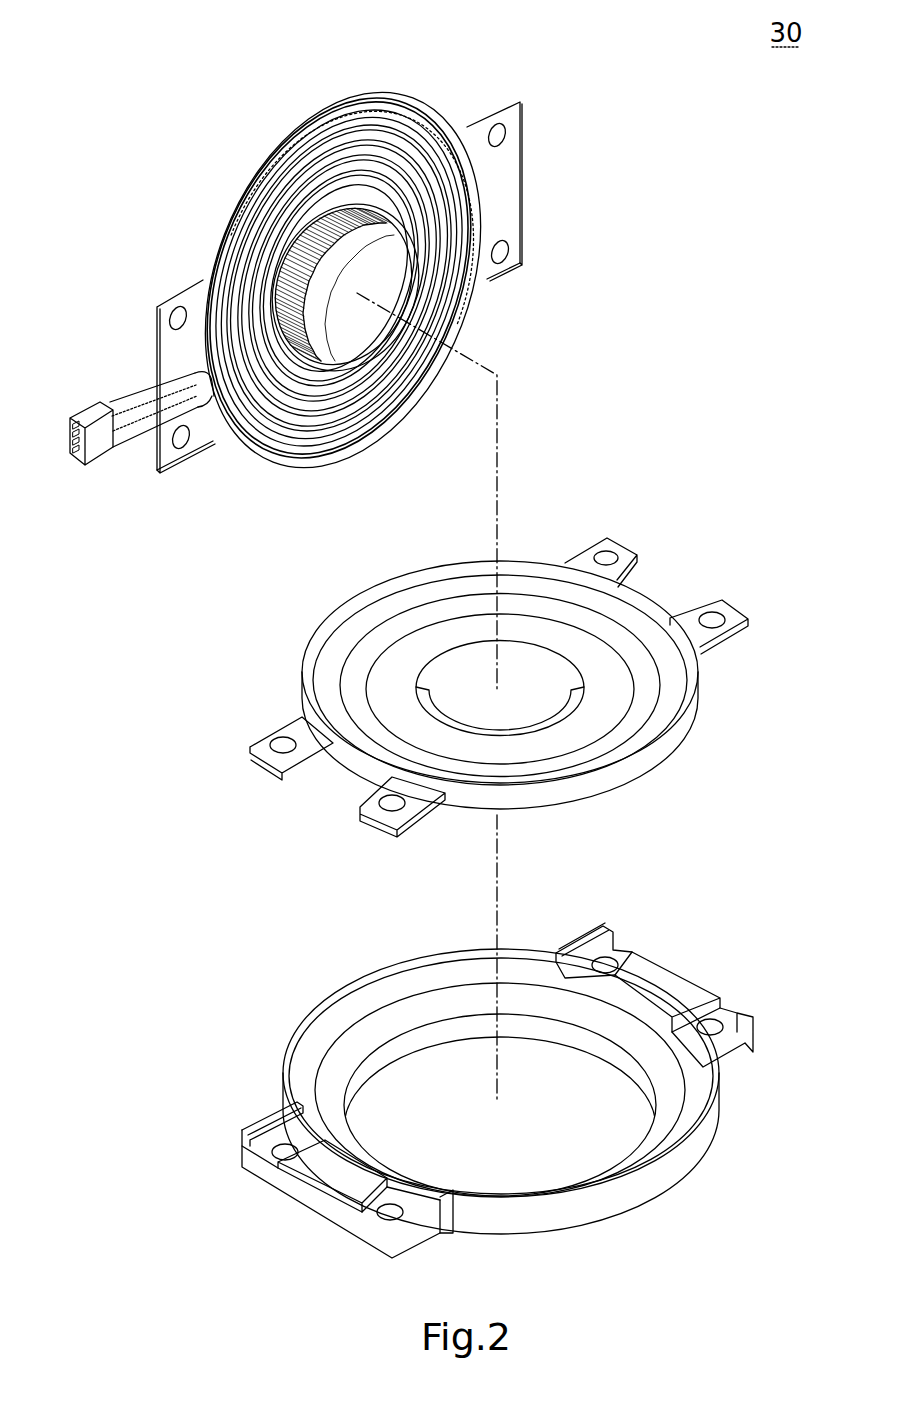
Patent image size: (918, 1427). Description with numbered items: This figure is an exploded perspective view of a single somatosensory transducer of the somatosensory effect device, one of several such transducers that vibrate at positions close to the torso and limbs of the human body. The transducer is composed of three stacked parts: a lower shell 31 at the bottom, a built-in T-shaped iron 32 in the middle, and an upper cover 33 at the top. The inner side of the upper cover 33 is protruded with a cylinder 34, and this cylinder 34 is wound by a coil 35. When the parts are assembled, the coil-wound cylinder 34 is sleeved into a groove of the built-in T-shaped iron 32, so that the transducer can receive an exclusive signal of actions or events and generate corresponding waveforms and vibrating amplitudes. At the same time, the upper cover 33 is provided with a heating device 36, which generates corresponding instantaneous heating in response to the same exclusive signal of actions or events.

The lower shell 31 is at (667, 1180).
The built-in T-shaped iron 32 is at (546, 685).
The upper cover 33 is at (442, 300).
The cylinder 34 is at (345, 347).
The coil 35 is at (292, 340).
The heating device 36 is at (324, 174).